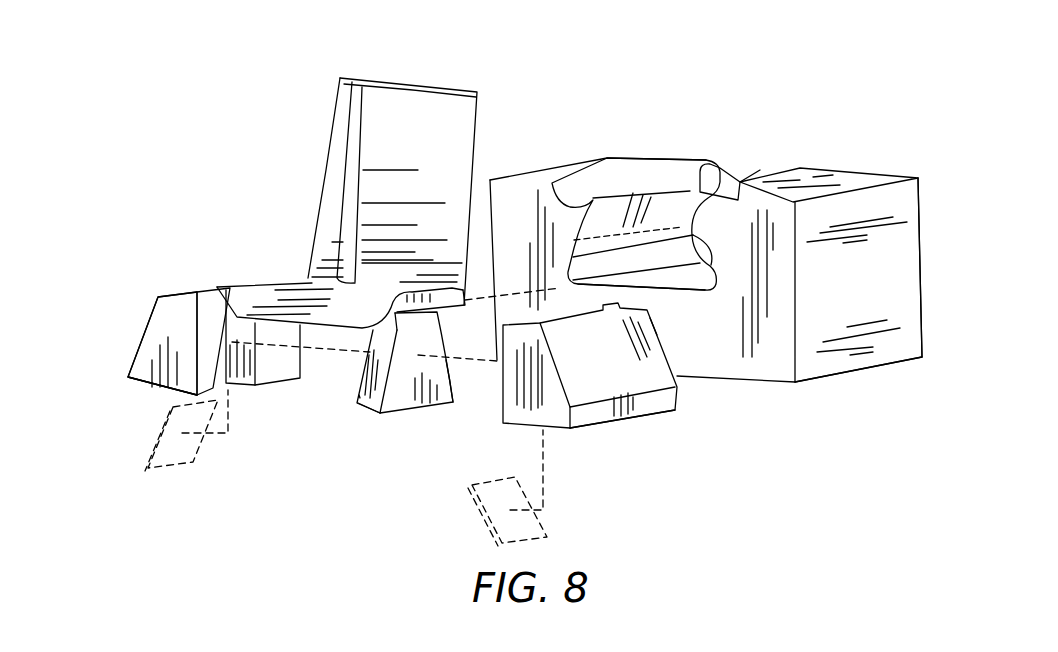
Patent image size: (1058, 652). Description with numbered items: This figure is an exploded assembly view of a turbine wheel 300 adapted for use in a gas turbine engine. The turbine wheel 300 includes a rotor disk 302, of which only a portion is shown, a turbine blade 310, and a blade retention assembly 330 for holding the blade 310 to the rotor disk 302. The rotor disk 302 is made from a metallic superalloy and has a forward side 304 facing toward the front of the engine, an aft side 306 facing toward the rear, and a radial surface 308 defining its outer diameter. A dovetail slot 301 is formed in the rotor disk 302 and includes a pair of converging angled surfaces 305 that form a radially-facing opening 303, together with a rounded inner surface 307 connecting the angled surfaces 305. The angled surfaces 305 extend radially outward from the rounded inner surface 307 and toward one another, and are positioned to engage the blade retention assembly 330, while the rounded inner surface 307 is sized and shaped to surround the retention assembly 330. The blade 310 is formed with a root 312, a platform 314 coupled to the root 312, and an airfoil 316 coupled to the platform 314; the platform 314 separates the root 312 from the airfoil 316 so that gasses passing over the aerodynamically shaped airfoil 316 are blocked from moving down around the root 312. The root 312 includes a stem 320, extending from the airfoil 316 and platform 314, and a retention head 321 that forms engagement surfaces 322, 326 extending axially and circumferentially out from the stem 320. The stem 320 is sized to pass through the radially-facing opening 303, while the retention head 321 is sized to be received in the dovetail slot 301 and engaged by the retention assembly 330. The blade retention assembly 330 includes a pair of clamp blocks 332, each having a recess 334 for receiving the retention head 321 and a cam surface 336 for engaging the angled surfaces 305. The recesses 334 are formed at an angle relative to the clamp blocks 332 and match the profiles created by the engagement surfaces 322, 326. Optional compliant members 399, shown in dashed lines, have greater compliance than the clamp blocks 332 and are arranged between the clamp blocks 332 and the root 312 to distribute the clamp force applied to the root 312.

The turbine wheel 300 is at (871, 86).
The dovetail slot 301 is at (709, 306).
The rotor disk 302 is at (931, 189).
The radially-facing opening 303 is at (761, 156).
The forward side 304 is at (785, 360).
The angled surfaces 305 is at (556, 192).
The aft side 306 is at (923, 325).
The rounded inner surface 307 is at (681, 294).
The radial surface 308 is at (853, 180).
The turbine blade 310 is at (349, 65).
The root 312 is at (349, 486).
The platform 314 is at (287, 262).
The airfoil 316 is at (304, 168).
The stem 320 is at (409, 332).
The retention head 321 is at (346, 384).
The engagement surface 322 is at (357, 407).
The engagement surface 326 is at (460, 380).
The blade retention assembly 330 is at (131, 338).
The clamp block 332 is at (124, 387).
The recess 334 is at (235, 299).
The cam surface 336 is at (143, 330).
The compliant member 399 is at (182, 473).